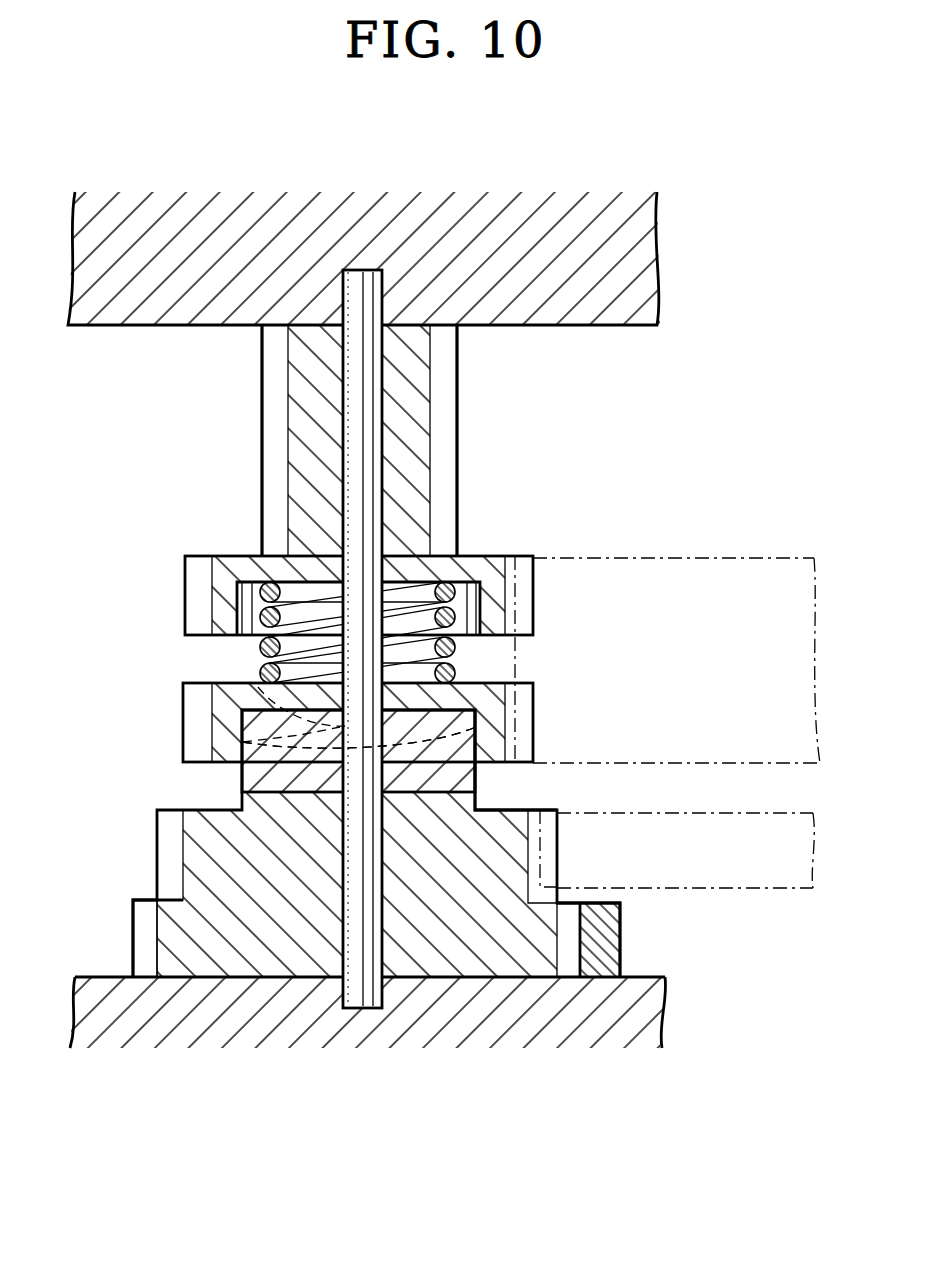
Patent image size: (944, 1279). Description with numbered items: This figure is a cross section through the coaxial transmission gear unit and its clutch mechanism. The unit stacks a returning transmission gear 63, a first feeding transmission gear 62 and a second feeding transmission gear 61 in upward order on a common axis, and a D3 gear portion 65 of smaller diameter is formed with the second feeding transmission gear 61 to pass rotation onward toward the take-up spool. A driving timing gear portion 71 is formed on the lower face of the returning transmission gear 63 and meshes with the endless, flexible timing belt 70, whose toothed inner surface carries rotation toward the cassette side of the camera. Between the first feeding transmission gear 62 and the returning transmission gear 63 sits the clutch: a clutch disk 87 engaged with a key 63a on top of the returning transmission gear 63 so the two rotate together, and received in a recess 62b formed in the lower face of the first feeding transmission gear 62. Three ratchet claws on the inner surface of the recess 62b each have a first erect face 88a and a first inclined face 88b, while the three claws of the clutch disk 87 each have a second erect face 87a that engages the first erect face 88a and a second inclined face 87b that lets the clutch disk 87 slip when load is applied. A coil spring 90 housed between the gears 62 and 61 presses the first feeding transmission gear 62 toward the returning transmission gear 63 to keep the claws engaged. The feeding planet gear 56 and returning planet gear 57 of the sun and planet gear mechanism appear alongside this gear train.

The feeding planet gear 56 is at (686, 558).
The returning planet gear 57 is at (790, 890).
The second feeding transmission gear 61 is at (190, 586).
The first feeding transmission gear 62 is at (165, 700).
The recess 62b is at (478, 710).
The returning transmission gear 63 is at (165, 855).
The key 63a is at (478, 803).
The D3 gear portion 65 is at (447, 430).
The timing belt 70 is at (620, 942).
The driving timing gear portion 71 is at (135, 940).
The clutch disk 87 is at (215, 778).
The second erect face 87a is at (478, 725).
The first erect face 88a is at (478, 725).
The second inclined face 87b is at (243, 742).
The first inclined face 88b is at (258, 687).
The coil spring 90 is at (492, 650).